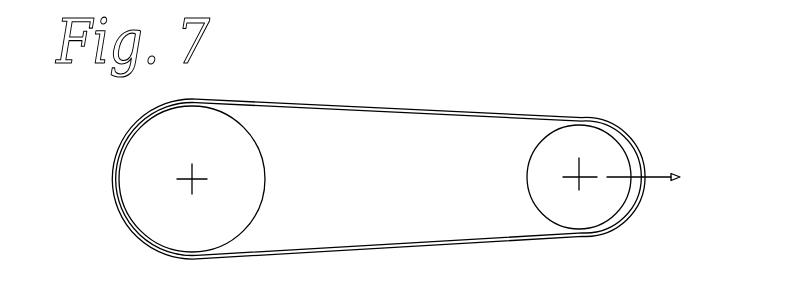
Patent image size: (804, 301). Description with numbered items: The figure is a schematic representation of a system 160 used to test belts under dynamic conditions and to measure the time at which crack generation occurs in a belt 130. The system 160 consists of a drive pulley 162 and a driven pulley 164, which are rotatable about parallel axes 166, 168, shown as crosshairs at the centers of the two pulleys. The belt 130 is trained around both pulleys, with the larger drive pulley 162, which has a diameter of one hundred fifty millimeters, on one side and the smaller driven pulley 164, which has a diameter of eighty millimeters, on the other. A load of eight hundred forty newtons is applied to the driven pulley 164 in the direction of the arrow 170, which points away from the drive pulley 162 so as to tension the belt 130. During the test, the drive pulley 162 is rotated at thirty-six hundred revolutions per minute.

The belt 130 is at (468, 111).
The system 160 is at (630, 97).
The drive pulley 162 is at (145, 207).
The driven pulley 164 is at (598, 208).
The axis 166 is at (192, 179).
The axis 168 is at (587, 167).
The arrow 170 is at (651, 172).